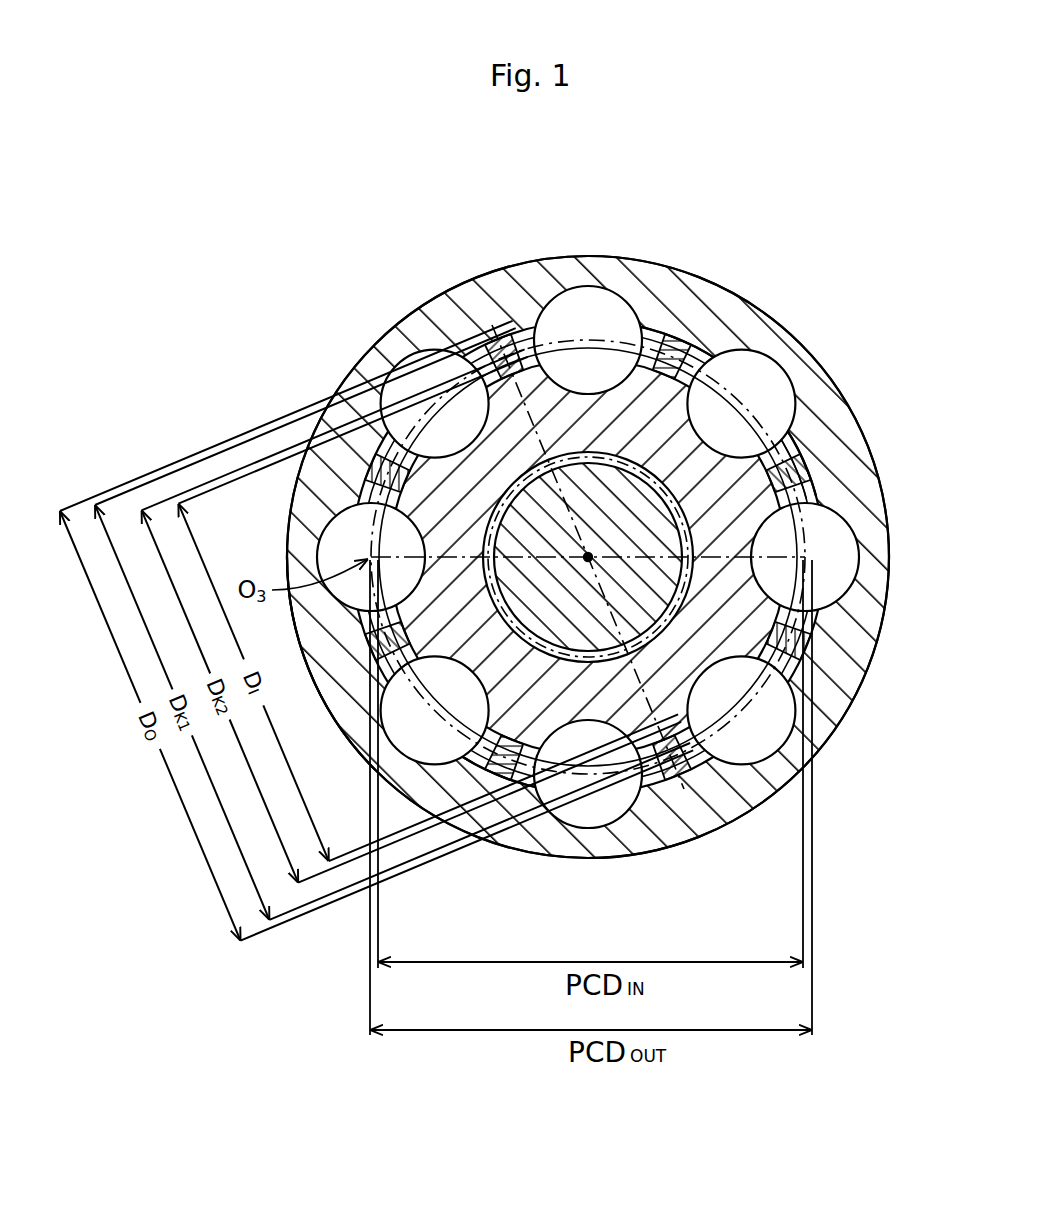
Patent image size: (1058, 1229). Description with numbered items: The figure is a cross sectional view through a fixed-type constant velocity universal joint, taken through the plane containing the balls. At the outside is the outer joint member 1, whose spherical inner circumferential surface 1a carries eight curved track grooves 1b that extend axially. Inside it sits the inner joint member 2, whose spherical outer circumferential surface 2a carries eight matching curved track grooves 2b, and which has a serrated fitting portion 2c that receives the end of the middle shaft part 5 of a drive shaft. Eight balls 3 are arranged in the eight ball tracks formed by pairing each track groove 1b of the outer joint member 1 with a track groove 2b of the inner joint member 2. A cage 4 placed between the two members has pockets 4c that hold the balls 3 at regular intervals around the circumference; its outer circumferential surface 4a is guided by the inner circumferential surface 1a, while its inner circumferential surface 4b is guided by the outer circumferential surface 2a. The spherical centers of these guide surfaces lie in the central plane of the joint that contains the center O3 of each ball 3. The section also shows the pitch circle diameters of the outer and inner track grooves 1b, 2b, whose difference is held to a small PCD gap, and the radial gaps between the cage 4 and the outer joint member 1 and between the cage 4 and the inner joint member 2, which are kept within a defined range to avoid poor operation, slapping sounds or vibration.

The outer joint member 1 is at (422, 287).
The inner circumferential surface 1a is at (375, 750).
The track grooves 1b is at (436, 742).
The inner joint member 2 is at (790, 420).
The outer circumferential surface 2a is at (708, 347).
The track grooves 2b is at (737, 452).
The serrated fitting portion 2c is at (637, 473).
The balls 3 is at (322, 519).
The cage 4 is at (648, 623).
The outer circumferential surface 4a is at (822, 486).
The inner circumferential surface 4b is at (790, 430).
The pockets 4c is at (812, 462).
The middle shaft part 5 is at (668, 598).
The center of the ball O3 is at (810, 556).